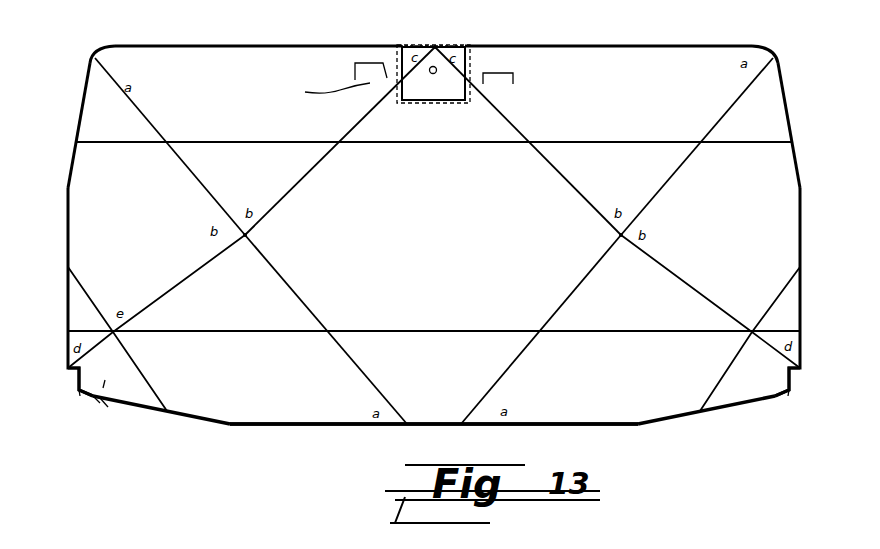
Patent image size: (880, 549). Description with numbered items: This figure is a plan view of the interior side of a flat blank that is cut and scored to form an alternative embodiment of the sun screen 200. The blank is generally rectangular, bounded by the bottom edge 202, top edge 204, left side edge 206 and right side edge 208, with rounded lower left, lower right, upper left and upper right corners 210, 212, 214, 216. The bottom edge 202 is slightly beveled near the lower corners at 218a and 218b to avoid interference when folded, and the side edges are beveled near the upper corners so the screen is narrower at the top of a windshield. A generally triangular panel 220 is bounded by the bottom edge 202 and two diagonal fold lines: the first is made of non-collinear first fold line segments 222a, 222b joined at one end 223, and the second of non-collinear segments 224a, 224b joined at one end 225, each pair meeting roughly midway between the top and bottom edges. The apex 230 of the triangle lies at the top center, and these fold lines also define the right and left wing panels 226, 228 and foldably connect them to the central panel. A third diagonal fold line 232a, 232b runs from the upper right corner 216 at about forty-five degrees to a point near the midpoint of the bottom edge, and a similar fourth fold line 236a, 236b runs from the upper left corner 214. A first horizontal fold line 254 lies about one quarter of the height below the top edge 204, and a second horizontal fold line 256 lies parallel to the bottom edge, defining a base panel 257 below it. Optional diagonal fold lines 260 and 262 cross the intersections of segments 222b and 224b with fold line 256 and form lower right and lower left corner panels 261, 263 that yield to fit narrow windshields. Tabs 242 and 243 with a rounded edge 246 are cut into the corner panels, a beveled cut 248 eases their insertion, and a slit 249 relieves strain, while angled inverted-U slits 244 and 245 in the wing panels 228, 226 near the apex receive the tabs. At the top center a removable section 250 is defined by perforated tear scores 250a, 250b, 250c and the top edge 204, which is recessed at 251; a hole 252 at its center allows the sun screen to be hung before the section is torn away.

The sun screen 200 is at (268, 30).
The bottom edge 202 is at (290, 425).
The top edge 204 is at (595, 44).
The left side edge 206 is at (68, 222).
The right side edge 208 is at (798, 224).
The lower left corner 210 is at (122, 482).
The lower right corner 212 is at (766, 488).
The upper left corner 214 is at (90, 46).
The upper right corner 216 is at (784, 50).
The bevel 218a is at (148, 418).
The bevel 218b is at (705, 416).
The triangular panel 220 is at (453, 227).
The first fold line segment 222a is at (548, 168).
The first fold line segment 222b is at (668, 280).
The end 223 is at (633, 230).
The second diagonal fold line segment 224a is at (303, 182).
The second fold line segment 224b is at (182, 283).
The end 225 is at (248, 238).
The right wing panel 226 is at (733, 197).
The left wing panel 228 is at (160, 197).
The apex 230 is at (433, 46).
The third diagonal fold line 232a is at (645, 206).
The third diagonal fold line 232b is at (577, 280).
The fourth fold line 236a is at (213, 198).
The fourth fold line 236b is at (310, 310).
The tab 242 is at (80, 395).
The tab 243 is at (767, 402).
The slit 244 is at (318, 87).
The slit 245 is at (497, 78).
The rounded edge 246 is at (100, 403).
The beveled cut 248 is at (108, 407).
The slit 249 is at (140, 387).
The removable section 250 is at (446, 40).
The perforated tear score 250a is at (335, 99).
The perforated tear score 250b is at (403, 103).
The perforated tear score 250c is at (470, 52).
The recess 251 is at (407, 45).
The hole 252 is at (432, 74).
The first horizontal fold line 254 is at (260, 141).
The second horizontal fold line 256 is at (235, 333).
The base panel 257 is at (320, 408).
The seventh diagonal fold line 260 is at (720, 373).
The lower right corner panel 261 is at (766, 371).
The eighth diagonal fold line 262 is at (148, 385).
The lower left corner panel 263 is at (123, 371).